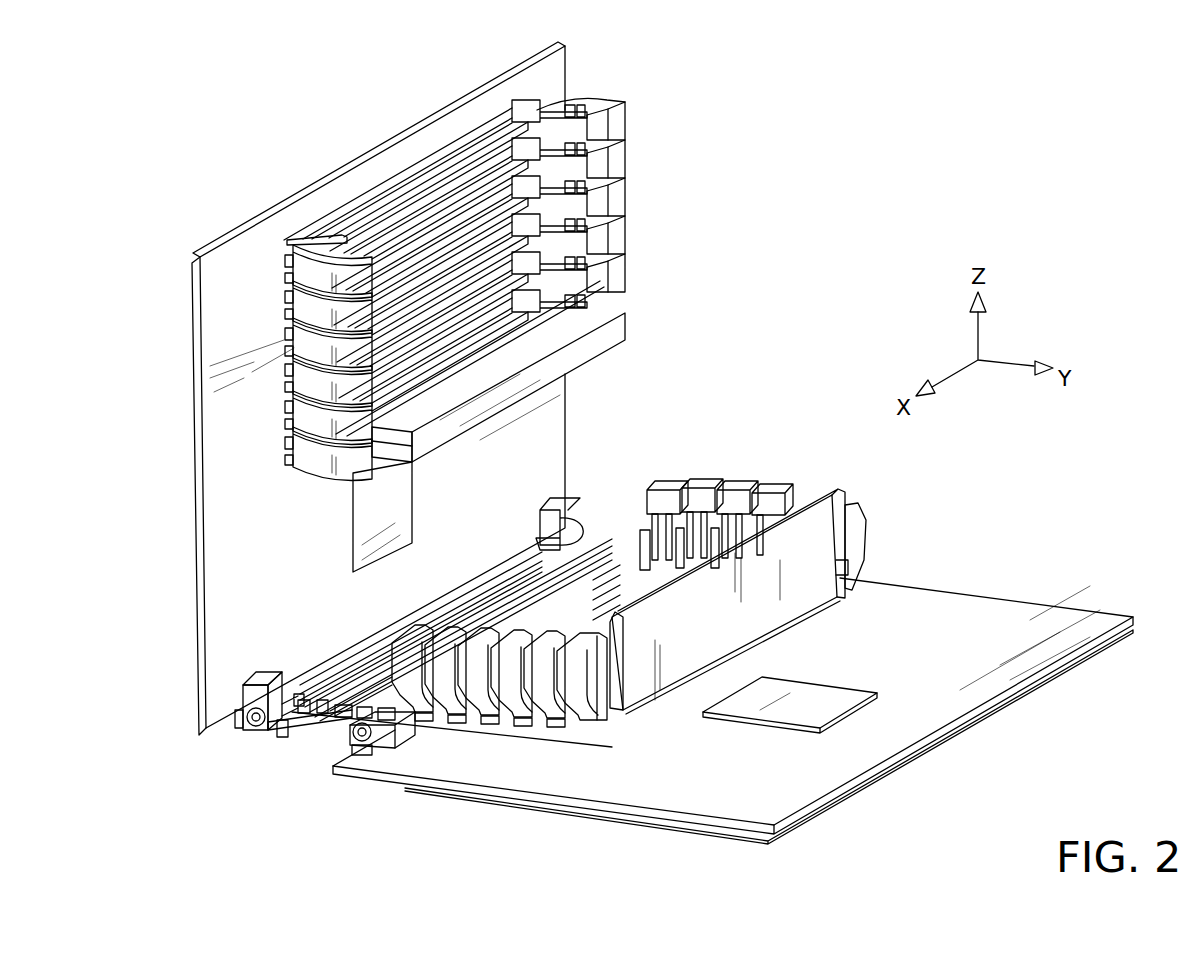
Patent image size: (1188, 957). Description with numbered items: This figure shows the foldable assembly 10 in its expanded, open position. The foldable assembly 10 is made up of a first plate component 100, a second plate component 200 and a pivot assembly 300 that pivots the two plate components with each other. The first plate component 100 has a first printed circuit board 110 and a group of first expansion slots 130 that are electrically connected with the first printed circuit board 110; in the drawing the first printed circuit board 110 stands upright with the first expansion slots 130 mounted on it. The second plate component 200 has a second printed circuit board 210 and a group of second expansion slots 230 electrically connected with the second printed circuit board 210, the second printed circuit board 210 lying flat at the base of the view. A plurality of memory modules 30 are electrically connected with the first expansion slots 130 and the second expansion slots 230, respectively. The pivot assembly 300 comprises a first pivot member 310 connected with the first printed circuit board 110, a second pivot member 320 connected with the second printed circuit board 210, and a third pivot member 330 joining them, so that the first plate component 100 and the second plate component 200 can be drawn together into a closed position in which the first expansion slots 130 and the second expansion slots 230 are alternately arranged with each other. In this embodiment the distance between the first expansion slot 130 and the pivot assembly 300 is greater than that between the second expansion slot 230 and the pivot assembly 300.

The foldable assembly 10 is at (902, 153).
The first plate component 100 is at (580, 71).
The first printed circuit board 110 is at (248, 470).
The first expansion slot 130 is at (618, 270).
The memory module 30 is at (590, 357).
The second plate component 200 is at (1045, 552).
The second printed circuit board 210 is at (930, 637).
The second expansion slot 230 is at (703, 490).
The pivot assembly 300 is at (320, 758).
The first pivot member 310 is at (252, 680).
The second pivot member 320 is at (412, 738).
The third pivot member 330 is at (325, 724).